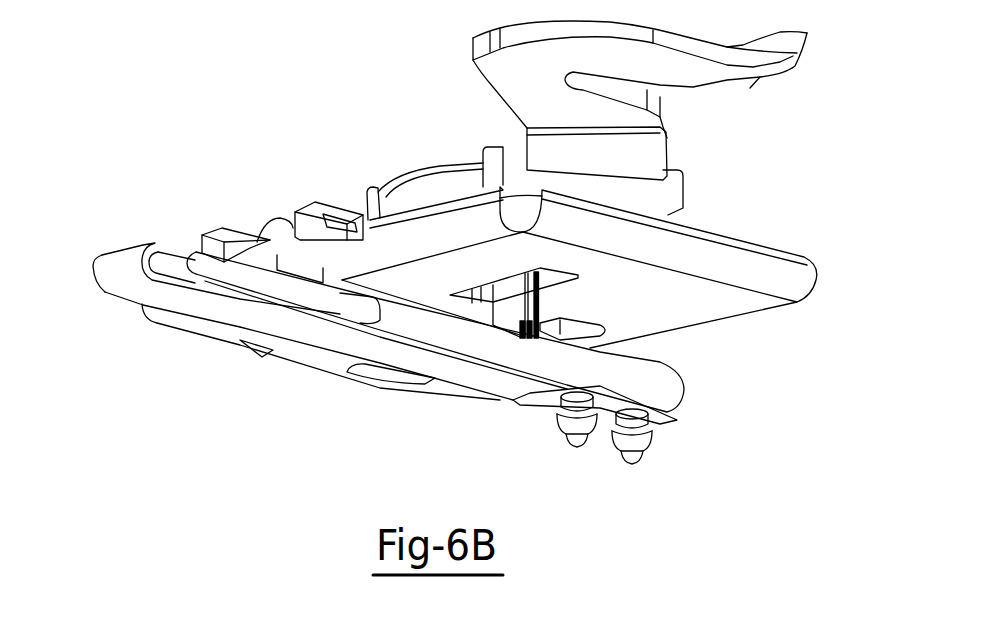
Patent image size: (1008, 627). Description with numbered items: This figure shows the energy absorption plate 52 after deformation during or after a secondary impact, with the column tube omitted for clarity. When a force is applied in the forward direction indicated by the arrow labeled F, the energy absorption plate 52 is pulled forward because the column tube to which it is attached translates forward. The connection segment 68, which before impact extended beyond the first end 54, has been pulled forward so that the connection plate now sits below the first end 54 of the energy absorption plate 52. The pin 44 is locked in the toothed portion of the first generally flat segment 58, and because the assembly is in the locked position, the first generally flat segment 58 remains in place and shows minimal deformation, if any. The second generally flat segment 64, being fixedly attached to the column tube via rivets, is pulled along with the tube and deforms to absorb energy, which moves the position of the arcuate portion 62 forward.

The pin 44 is at (543, 301).
The energy absorption plate 52 is at (88, 243).
The first end 54 is at (683, 388).
The first generally flat segment 58 is at (368, 298).
The arcuate portion 62 is at (120, 263).
The second generally flat segment 64 is at (298, 333).
The connection segment 68 is at (607, 415).
The arrow indicating forward direction of force F is at (712, 432).